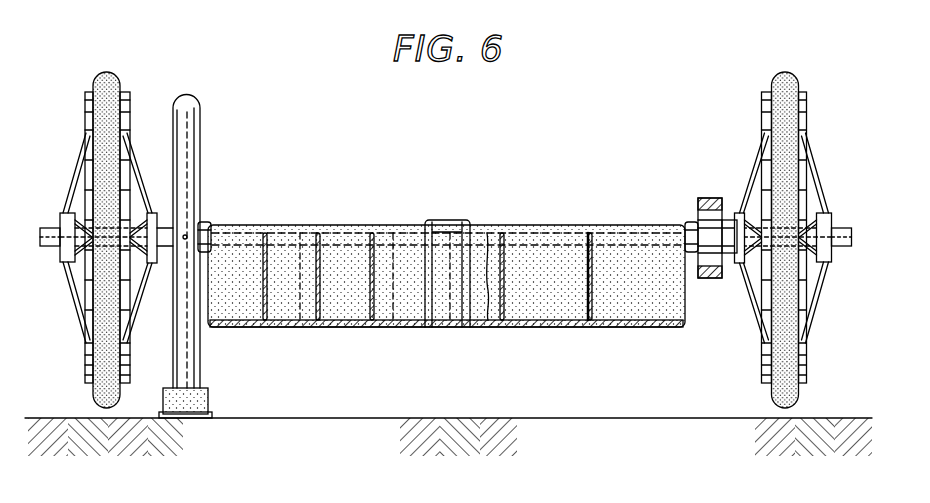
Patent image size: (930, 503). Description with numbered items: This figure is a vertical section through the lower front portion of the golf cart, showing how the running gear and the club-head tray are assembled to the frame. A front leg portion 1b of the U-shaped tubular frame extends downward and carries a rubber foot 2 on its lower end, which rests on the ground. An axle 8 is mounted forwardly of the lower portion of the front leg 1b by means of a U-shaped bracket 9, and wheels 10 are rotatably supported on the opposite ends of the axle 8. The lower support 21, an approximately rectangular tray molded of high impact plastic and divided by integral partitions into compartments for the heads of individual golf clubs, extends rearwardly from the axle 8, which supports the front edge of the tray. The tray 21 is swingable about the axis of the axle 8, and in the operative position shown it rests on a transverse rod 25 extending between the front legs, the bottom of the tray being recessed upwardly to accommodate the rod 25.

The wheel 10 is at (120, 84).
The axle 8 is at (44, 254).
The front leg portion 1b is at (195, 120).
The rubber foot 2 is at (206, 404).
The transverse rod 25 is at (216, 226).
The lower support 21 is at (512, 328).
The U-shaped bracket 9 is at (698, 200).